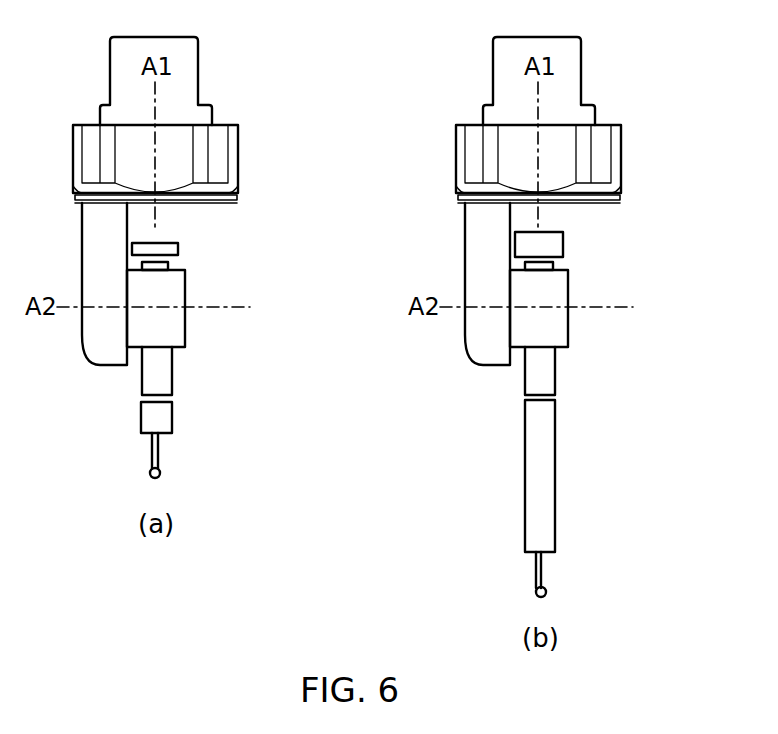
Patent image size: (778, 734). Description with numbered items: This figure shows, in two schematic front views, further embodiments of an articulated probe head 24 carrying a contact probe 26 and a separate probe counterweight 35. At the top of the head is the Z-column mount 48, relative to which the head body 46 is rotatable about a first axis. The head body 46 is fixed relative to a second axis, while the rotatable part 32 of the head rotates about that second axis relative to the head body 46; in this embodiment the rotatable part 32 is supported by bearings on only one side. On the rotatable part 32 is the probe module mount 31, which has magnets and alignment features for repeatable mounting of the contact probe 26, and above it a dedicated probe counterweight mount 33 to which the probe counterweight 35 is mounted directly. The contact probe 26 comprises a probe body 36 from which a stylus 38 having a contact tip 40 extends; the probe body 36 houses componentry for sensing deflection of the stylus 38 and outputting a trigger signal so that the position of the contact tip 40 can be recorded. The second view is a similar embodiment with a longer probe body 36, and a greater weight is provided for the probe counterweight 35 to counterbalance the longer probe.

The articulated probe head 24 is at (256, 91).
The Z-column mount 48 is at (227, 167).
The head body 46 is at (97, 233).
The probe counterweight 35 is at (178, 250).
The probe counterweight mount 33 is at (172, 264).
The rotatable part 32 is at (185, 297).
The probe module mount 31 is at (172, 368).
The probe body 36 is at (172, 412).
The stylus 38 is at (160, 447).
The contact tip 40 is at (160, 474).
The contact probe 26 is at (112, 446).